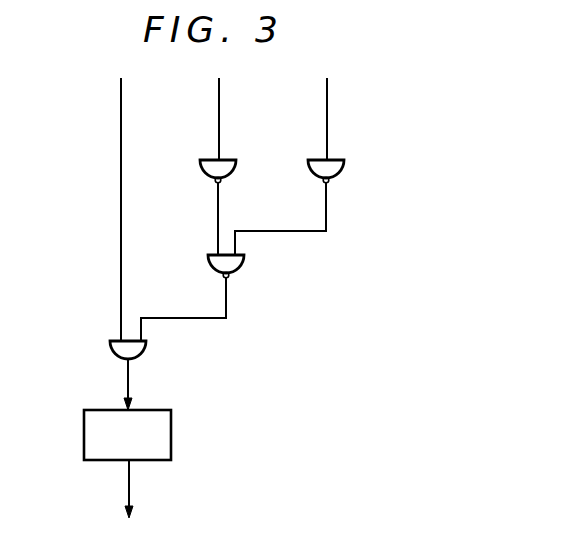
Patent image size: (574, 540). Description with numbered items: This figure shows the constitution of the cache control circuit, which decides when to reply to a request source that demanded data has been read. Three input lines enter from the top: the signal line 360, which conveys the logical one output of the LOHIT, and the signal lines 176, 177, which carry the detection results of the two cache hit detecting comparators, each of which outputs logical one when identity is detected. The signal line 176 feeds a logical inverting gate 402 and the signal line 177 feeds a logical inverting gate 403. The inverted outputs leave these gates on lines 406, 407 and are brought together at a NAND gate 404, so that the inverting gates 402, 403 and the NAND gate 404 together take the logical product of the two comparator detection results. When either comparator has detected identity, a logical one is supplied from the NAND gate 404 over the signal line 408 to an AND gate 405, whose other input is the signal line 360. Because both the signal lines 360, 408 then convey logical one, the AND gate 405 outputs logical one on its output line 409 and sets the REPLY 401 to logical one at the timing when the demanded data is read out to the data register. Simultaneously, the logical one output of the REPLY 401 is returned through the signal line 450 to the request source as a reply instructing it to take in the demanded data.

The signal line 360 is at (121, 99).
The signal line 176 is at (219, 99).
The signal line 177 is at (327, 99).
The logical inverting gate 402 is at (233, 158).
The logical inverting gate 403 is at (341, 158).
The gate output line 406 is at (219, 208).
The gate output line 407 is at (327, 207).
The NAND gate 404 is at (243, 261).
The signal line 408 is at (227, 318).
The AND gate 405 is at (146, 348).
The gate output line 409 is at (127, 380).
The REPLY 401 is at (171, 430).
The signal line 450 is at (130, 485).